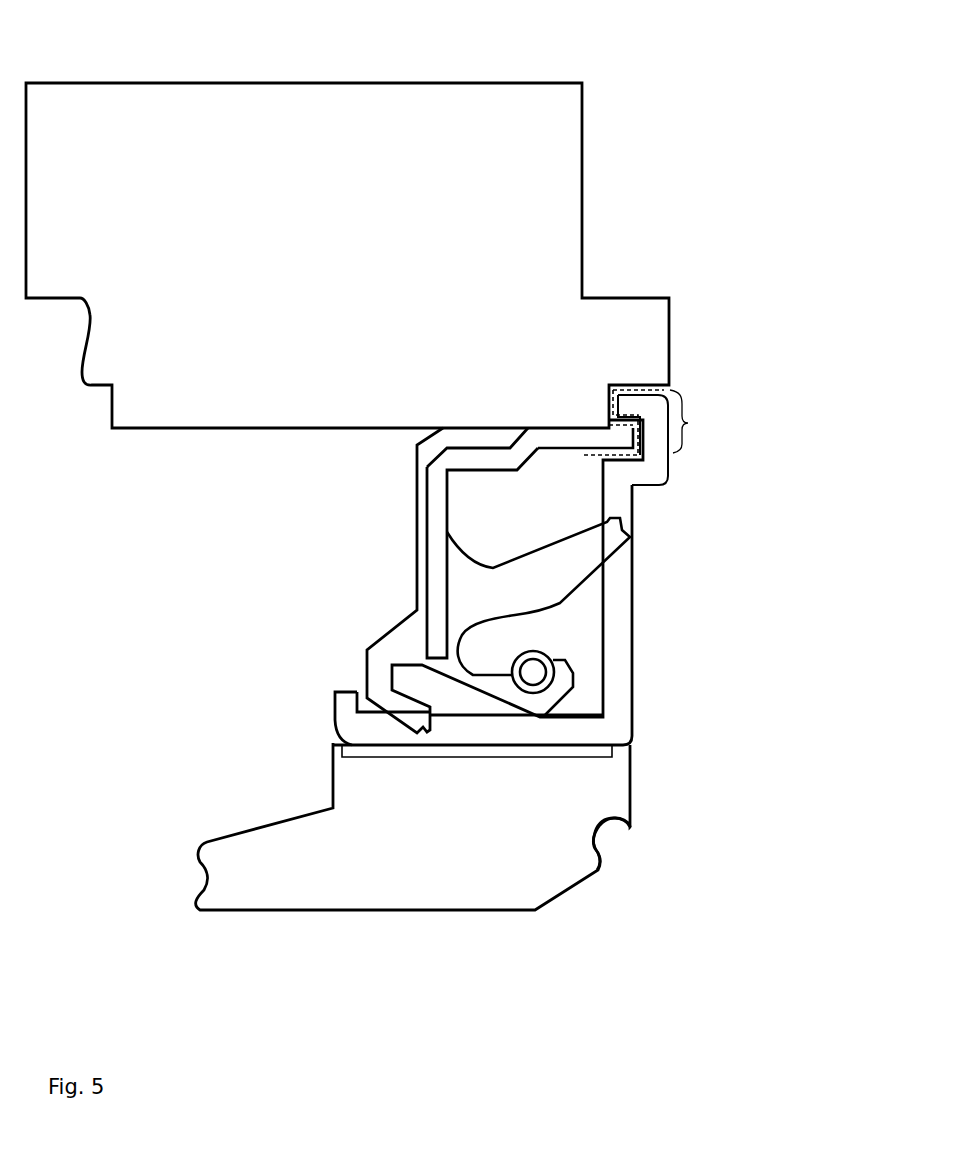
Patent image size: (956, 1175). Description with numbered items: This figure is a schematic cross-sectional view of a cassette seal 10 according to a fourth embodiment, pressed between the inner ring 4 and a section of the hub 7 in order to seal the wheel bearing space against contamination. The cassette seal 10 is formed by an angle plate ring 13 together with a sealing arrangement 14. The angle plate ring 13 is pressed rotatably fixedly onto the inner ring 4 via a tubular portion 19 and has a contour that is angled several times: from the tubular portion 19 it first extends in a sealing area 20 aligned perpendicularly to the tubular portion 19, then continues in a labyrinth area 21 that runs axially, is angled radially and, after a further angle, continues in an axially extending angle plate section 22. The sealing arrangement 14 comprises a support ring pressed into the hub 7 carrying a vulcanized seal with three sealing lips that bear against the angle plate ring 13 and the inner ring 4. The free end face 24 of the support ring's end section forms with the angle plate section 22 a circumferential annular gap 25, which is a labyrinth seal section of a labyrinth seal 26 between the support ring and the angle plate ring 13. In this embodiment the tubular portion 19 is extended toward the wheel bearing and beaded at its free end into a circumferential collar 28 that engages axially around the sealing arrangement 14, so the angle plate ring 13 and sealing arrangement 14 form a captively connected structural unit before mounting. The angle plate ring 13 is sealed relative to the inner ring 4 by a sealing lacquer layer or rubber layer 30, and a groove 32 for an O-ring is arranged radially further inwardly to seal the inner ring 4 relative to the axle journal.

The inner ring 4 is at (578, 860).
The hub 7 is at (200, 140).
The cassette seal 10 is at (712, 640).
The angle plate ring 13 is at (617, 722).
The sealing arrangement 14 is at (408, 567).
The tubular portion 19 is at (493, 732).
The sealing area 20 is at (680, 727).
The labyrinth area 21 is at (650, 422).
The angle plate section 22 is at (658, 383).
The free end face 24 is at (614, 437).
The annular gap 25 is at (686, 423).
The labyrinth seal 26 is at (582, 460).
The collar 28 is at (347, 702).
The sealing lacquer layer or rubber layer 30 is at (440, 757).
The groove 32 is at (615, 845).